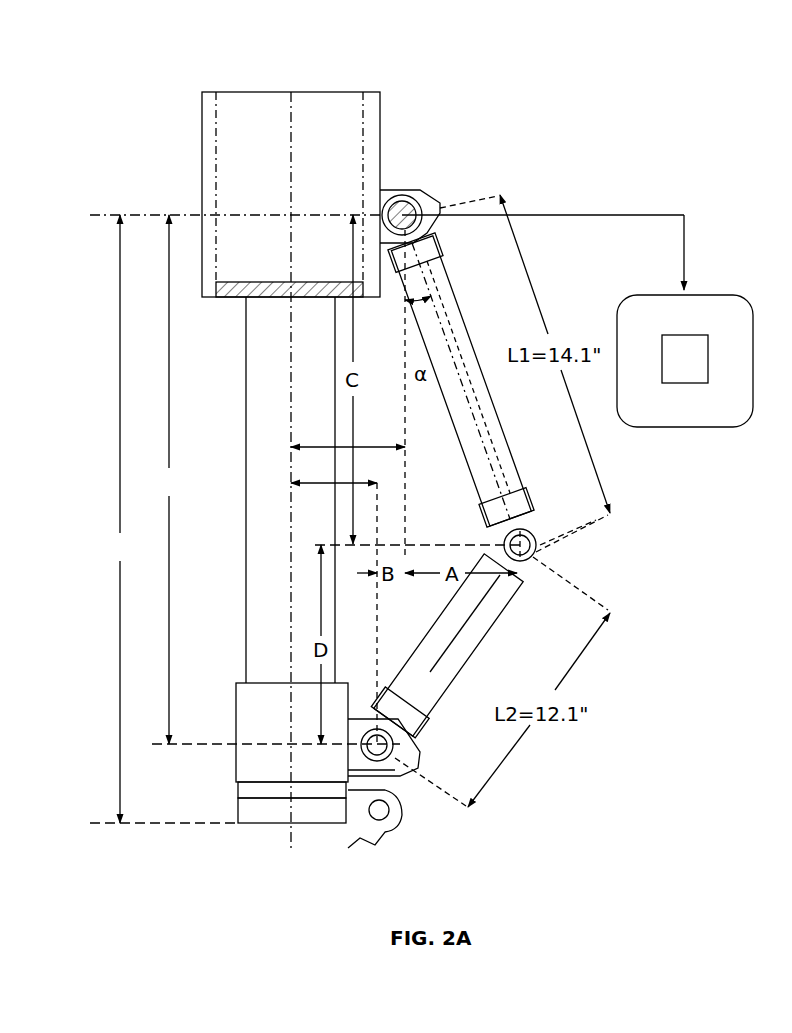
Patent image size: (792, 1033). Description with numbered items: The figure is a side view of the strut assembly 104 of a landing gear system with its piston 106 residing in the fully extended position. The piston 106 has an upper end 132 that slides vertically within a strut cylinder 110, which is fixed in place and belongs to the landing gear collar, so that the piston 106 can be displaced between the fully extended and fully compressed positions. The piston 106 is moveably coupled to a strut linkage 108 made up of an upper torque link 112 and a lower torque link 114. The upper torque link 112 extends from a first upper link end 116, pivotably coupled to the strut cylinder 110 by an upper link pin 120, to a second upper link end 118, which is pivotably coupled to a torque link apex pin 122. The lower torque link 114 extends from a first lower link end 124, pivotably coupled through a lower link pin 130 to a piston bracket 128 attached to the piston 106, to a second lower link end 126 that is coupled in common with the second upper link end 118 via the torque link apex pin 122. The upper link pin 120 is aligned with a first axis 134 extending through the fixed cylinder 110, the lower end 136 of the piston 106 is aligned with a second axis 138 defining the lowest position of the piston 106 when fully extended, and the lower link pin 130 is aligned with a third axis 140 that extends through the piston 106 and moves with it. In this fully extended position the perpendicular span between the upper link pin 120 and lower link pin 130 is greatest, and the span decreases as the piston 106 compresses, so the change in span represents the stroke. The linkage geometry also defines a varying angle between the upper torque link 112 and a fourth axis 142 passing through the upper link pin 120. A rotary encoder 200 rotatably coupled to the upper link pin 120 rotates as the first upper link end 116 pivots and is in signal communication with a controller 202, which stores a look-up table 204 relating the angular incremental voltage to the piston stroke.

The strut assembly 104 is at (163, 58).
The piston 106 is at (258, 365).
The strut linkage 108 is at (553, 547).
The strut cylinder 110 is at (200, 138).
The upper torque link 112 is at (470, 330).
The lower torque link 114 is at (450, 680).
The first upper link end 116 is at (430, 258).
The second upper link end 118 is at (527, 502).
The upper link pin 120 is at (432, 195).
The torque link apex pin 122 is at (540, 555).
The first lower link end 124 is at (505, 600).
The second lower link end 126 is at (372, 718).
The piston bracket 128 is at (245, 760).
The lower link pin 130 is at (410, 760).
The upper end 132 is at (275, 283).
The first axis 134 is at (152, 215).
The lower end 136 is at (260, 812).
The second axis 138 is at (118, 818).
The third axis 140 is at (222, 742).
The fourth axis 142 is at (462, 540).
The rotary encoder 200 is at (406, 194).
The controller 202 is at (710, 297).
The look-up table 204 is at (685, 359).